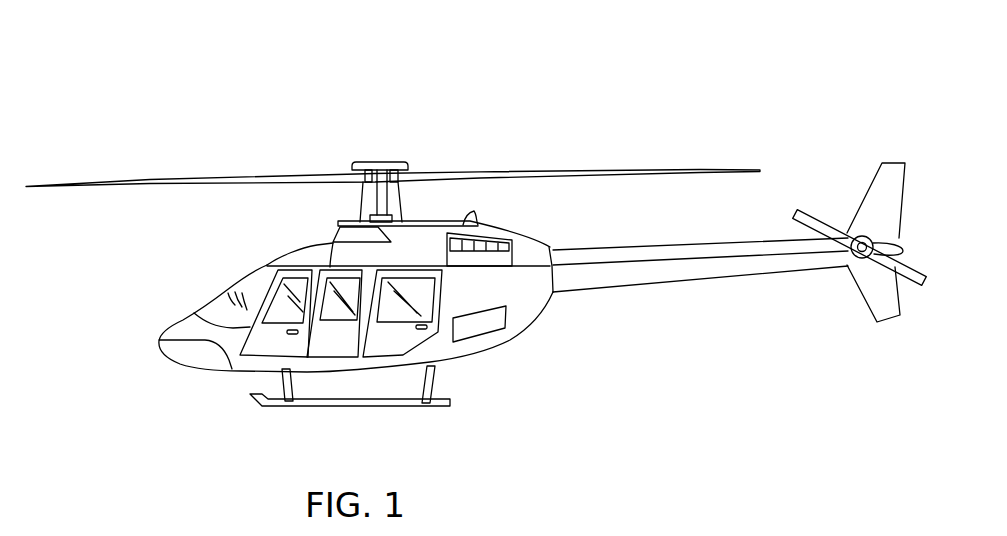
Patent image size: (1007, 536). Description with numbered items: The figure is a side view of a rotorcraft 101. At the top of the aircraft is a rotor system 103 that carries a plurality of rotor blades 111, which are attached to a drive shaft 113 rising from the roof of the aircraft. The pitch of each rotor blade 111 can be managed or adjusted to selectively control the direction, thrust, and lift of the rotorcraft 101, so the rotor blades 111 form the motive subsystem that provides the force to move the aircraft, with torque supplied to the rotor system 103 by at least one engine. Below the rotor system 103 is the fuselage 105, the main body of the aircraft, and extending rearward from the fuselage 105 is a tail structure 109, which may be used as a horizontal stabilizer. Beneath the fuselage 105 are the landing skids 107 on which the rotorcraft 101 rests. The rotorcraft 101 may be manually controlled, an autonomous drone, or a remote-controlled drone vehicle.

The rotorcraft 101 is at (476, 243).
The rotor system 103 is at (378, 150).
The fuselage 105 is at (193, 368).
The landing skids 107 is at (355, 409).
The tail structure 109 is at (677, 285).
The rotor blades 111 is at (573, 171).
The drive shaft 113 is at (360, 210).